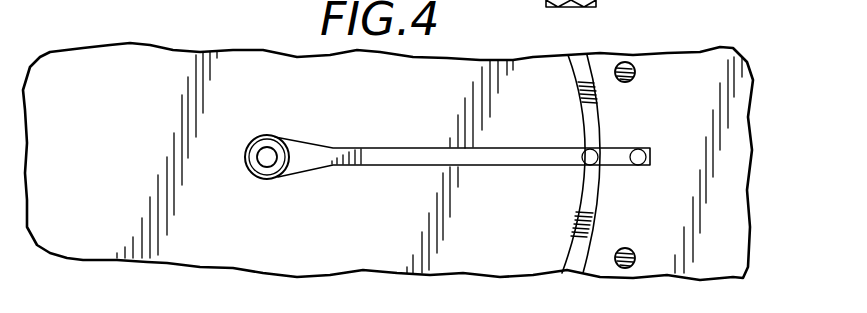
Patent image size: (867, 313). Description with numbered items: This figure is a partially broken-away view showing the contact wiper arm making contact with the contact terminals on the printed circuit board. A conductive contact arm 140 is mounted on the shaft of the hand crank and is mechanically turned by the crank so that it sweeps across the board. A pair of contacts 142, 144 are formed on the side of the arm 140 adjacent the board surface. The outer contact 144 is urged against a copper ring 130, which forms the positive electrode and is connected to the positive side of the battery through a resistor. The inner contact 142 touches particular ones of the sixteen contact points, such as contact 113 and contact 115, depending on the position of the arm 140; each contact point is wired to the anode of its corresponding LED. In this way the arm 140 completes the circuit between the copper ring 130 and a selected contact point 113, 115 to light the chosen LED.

The contact arm 140 is at (375, 149).
The contact 142 is at (586, 150).
The contact 144 is at (648, 155).
The copper ring 130 is at (584, 196).
The contact 115 is at (636, 74).
The contact 113 is at (632, 250).